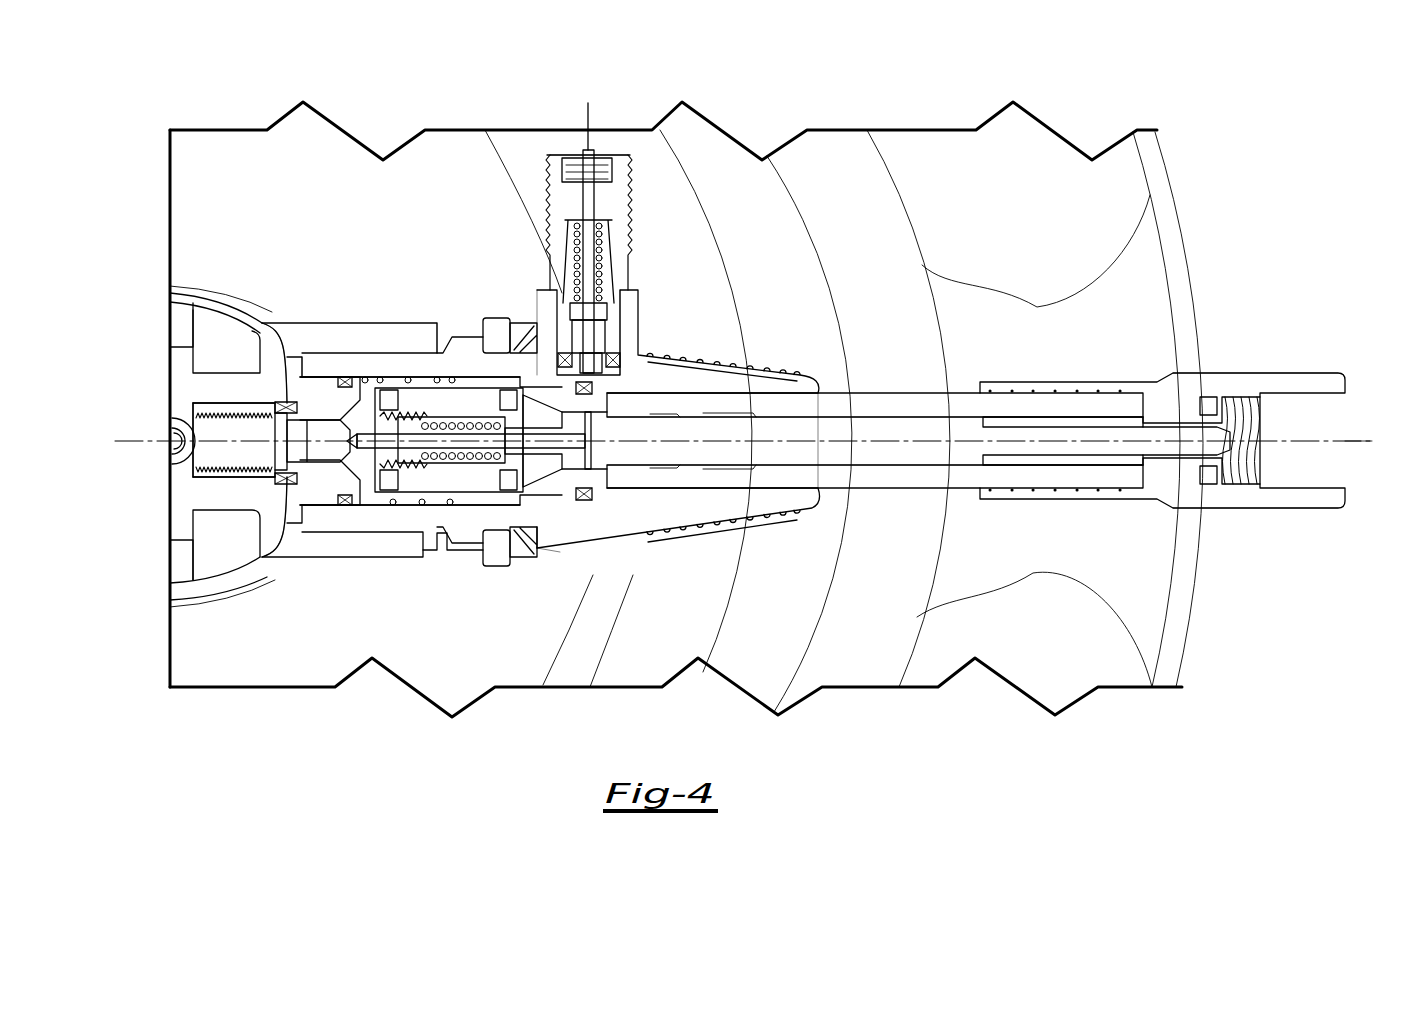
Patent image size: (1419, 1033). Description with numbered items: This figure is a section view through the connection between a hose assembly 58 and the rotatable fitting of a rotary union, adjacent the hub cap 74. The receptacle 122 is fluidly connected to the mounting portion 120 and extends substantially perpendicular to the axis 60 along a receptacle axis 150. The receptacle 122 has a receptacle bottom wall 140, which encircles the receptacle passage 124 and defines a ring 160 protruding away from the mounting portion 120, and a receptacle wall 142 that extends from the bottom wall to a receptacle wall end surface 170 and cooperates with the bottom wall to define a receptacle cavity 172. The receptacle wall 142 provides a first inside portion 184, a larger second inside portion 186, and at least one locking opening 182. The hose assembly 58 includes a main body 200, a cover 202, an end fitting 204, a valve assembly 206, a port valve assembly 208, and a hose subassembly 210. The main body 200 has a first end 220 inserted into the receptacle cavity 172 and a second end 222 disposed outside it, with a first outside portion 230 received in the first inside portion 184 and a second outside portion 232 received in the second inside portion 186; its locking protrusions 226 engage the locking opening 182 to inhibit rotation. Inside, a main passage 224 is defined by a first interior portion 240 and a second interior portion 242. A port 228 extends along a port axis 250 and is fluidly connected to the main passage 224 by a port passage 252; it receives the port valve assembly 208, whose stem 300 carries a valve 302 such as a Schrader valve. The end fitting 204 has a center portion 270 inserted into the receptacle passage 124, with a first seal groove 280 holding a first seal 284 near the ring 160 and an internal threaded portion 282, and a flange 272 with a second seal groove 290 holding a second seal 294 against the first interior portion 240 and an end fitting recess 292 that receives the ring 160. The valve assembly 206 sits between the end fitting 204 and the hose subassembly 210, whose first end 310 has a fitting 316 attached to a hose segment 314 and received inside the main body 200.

The hose assembly 58 is at (1255, 440).
The axis 60 is at (140, 447).
The hub cap 74 is at (310, 197).
The mounting portion 120 is at (197, 292).
The receptacle 122 is at (292, 323).
The receptacle passage 124 is at (166, 481).
The receptacle bottom wall 140 is at (262, 357).
The receptacle wall 142 is at (274, 517).
The receptacle axis 150 is at (1356, 408).
The ring 160 is at (302, 528).
The receptacle wall end surface 170 is at (518, 327).
The receptacle cavity 172 is at (285, 512).
The locking opening 182 is at (445, 325).
The first inside portion 184 is at (355, 325).
The second inside portion 186 is at (410, 327).
The main body 200 is at (636, 355).
The cover 202 is at (730, 352).
The end fitting 204 is at (196, 404).
The valve assembly 206 is at (532, 555).
The port valve assembly 208 is at (641, 174).
The hose subassembly 210 is at (1218, 365).
The first end 220 is at (268, 330).
The second end 222 is at (830, 390).
The main passage 224 is at (350, 507).
The locking protrusion 226 is at (477, 325).
The port 228 is at (645, 300).
The first outside portion 230 is at (350, 508).
The second outside portion 232 is at (425, 550).
The first interior portion 240 is at (545, 540).
The second interior portion 242 is at (688, 488).
The port axis 250 is at (590, 110).
The port passage 252 is at (565, 400).
The center portion 270 is at (220, 403).
The flange 272 is at (300, 352).
The first seal groove 280 is at (278, 521).
The threaded portion 282 is at (203, 474).
The first seal 284 is at (234, 440).
The second seal groove 290 is at (335, 512).
The end fitting recess 292 is at (318, 441).
The second seal 294 is at (372, 530).
The stem 300 is at (547, 253).
The valve 302 is at (608, 250).
The first end 310 is at (588, 492).
The hose segment 314 is at (950, 352).
The fitting 316 is at (598, 492).